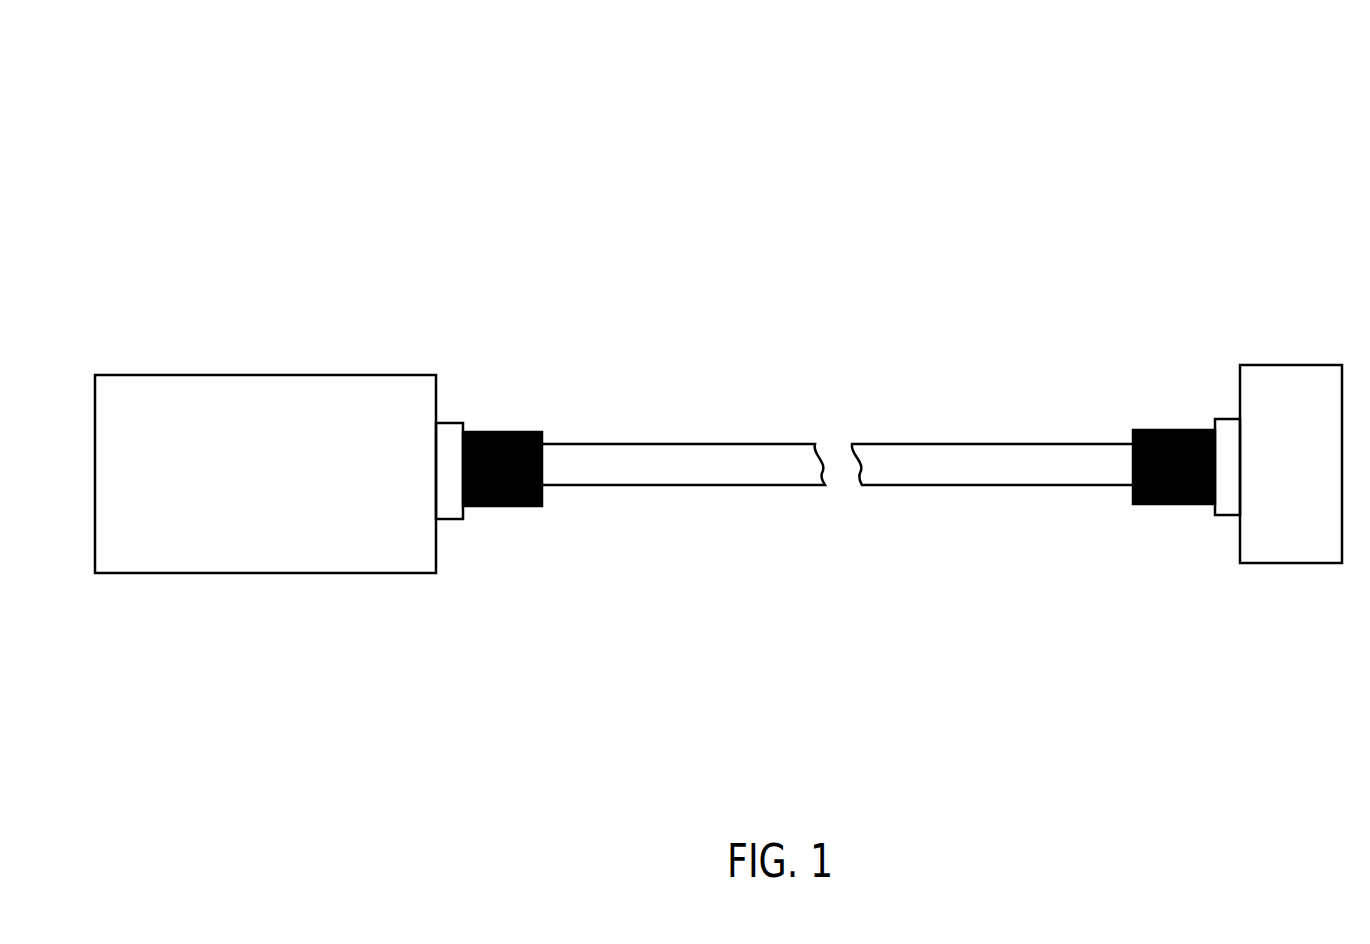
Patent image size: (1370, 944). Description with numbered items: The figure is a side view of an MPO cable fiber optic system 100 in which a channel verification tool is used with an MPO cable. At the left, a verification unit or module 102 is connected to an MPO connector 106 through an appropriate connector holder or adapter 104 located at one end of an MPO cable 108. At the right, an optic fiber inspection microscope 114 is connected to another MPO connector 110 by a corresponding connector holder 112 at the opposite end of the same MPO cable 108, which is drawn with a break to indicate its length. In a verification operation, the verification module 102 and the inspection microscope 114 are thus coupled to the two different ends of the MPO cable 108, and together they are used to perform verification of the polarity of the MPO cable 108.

The MPO cable fiber optic system 100 is at (146, 44).
The verification unit or module 102 is at (279, 375).
The connector holder or adapter 104 is at (459, 423).
The MPO connector 106 is at (510, 506).
The MPO cable 108 is at (750, 444).
The MPO connector 110 is at (1155, 504).
The connector holder 112 is at (1226, 419).
The optic fiber inspection microscope 114 is at (1306, 365).